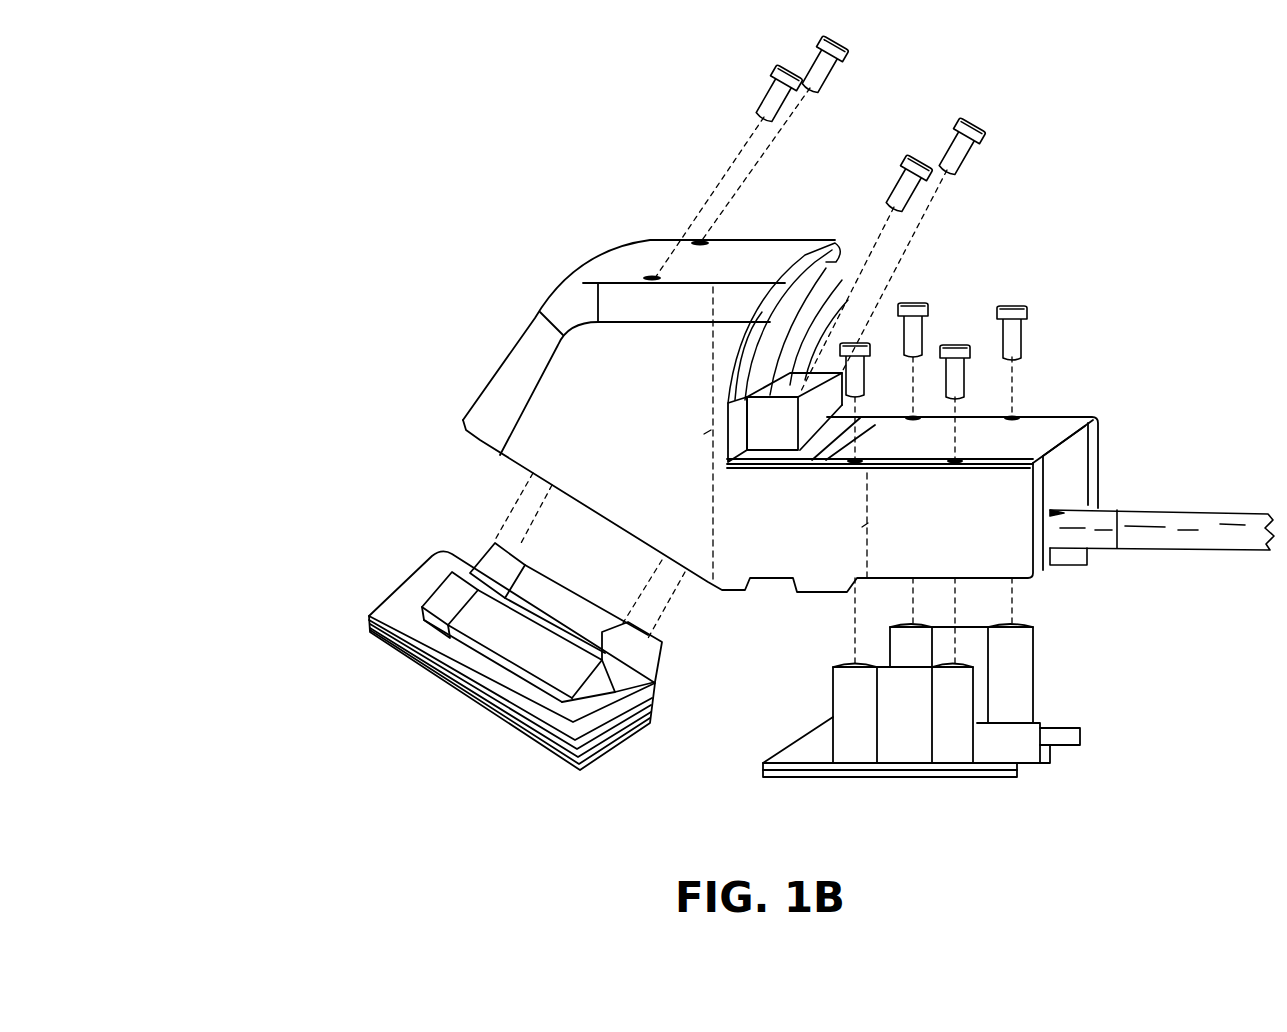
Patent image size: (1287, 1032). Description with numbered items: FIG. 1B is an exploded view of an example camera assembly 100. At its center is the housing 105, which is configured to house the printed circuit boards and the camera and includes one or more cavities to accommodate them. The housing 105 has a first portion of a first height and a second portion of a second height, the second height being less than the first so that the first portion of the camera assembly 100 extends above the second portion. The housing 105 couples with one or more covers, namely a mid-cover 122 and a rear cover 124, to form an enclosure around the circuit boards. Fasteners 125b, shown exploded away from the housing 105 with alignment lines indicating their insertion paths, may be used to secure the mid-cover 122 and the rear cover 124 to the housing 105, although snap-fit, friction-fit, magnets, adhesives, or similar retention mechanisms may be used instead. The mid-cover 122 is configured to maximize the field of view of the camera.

The camera assembly 100 is at (1114, 122).
The housing 105 is at (584, 315).
The mid-cover 122 is at (438, 552).
The rear cover 124 is at (1145, 628).
The fasteners 125b is at (1007, 307).